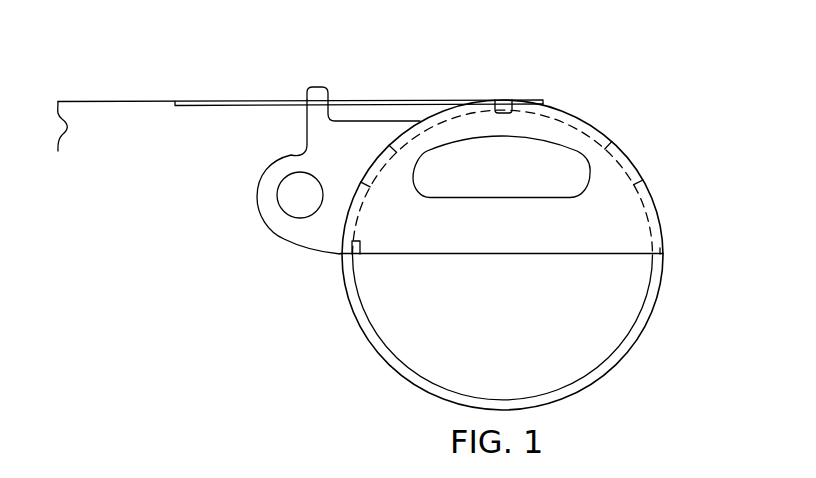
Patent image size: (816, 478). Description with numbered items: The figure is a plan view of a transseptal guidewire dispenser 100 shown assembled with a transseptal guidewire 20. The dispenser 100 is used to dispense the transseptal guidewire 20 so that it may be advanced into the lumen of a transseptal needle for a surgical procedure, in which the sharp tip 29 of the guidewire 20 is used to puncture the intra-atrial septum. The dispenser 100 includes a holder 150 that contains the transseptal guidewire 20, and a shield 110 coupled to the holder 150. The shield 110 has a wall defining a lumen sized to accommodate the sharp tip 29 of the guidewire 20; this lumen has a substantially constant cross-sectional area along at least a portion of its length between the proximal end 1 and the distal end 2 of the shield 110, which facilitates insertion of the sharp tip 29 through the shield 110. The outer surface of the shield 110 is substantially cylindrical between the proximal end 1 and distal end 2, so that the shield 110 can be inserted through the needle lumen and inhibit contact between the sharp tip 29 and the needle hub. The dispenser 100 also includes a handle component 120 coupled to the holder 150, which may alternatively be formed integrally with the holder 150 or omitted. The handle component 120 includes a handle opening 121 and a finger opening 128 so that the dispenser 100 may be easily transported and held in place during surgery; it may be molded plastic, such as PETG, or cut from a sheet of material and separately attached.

The transseptal guidewire dispenser 100 is at (505, 68).
The proximal end of shield 1 is at (307, 100).
The distal end of shield 2 is at (175, 101).
The sharp tip 29 is at (59, 142).
The shield 110 is at (221, 102).
The transseptal guidewire 20 is at (347, 100).
The finger opening 128 is at (280, 193).
The handle component 120 is at (648, 187).
The handle opening 121 is at (547, 151).
The holder 150 is at (347, 290).